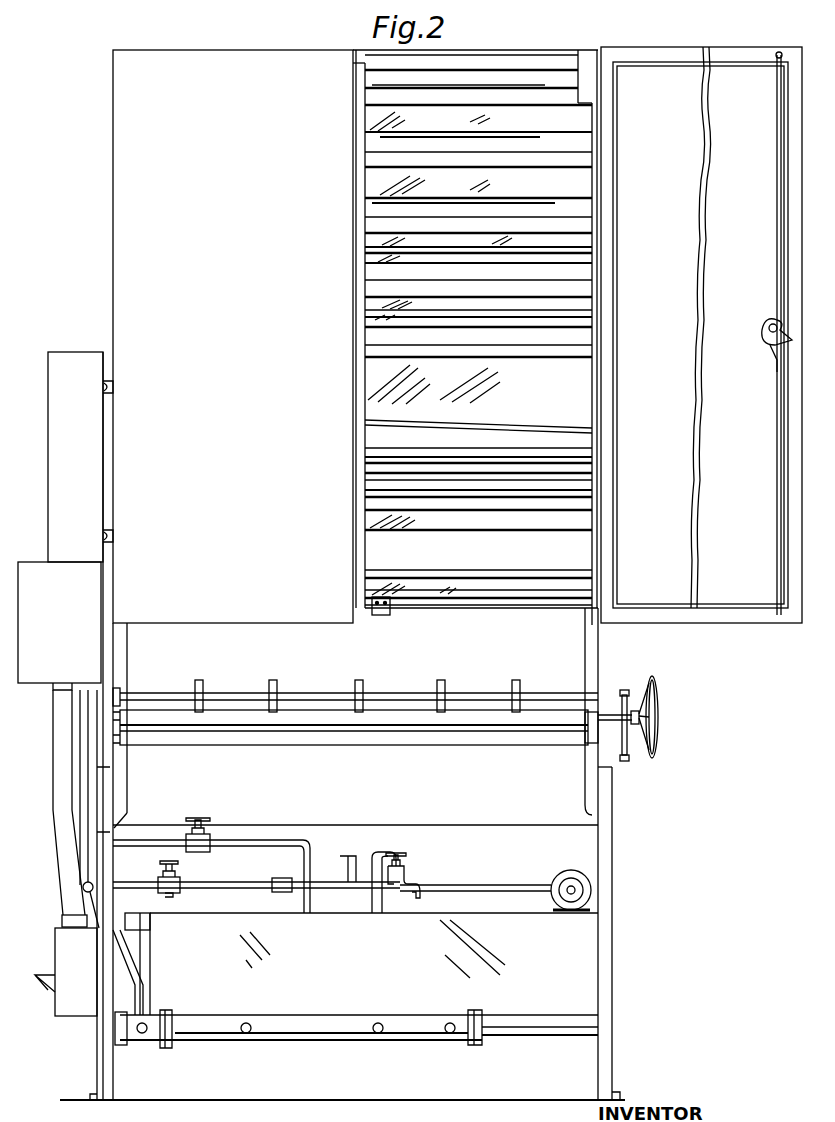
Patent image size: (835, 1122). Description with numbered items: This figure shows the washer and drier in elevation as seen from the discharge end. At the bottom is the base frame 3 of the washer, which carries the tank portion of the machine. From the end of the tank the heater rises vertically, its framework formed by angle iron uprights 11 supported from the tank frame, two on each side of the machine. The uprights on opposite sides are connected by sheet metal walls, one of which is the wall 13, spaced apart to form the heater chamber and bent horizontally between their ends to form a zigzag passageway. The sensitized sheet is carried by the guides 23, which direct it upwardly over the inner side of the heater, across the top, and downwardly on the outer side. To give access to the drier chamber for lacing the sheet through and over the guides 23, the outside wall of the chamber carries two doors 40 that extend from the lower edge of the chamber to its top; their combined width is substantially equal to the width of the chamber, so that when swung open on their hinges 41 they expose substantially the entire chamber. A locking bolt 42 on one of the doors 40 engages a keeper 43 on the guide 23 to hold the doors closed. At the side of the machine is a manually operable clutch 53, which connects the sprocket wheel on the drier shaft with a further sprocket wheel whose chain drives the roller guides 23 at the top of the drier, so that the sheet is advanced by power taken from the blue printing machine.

The base frame 3 is at (98, 1062).
The angle iron uprights 11 is at (124, 640).
The wall 13 is at (376, 402).
The guides 23 is at (546, 78).
The doors 40 is at (248, 58).
The hinges 41 is at (603, 148).
The locking bolt 42 is at (786, 524).
The keeper 43 is at (388, 617).
The manually operable clutch 53 is at (632, 692).